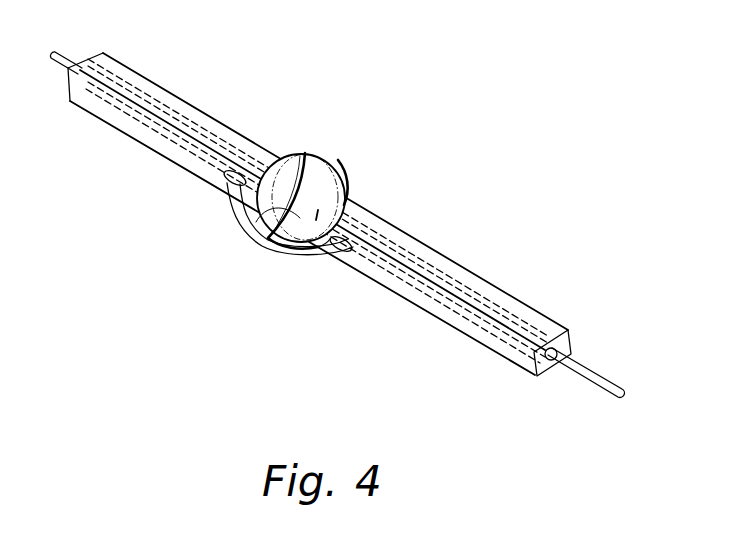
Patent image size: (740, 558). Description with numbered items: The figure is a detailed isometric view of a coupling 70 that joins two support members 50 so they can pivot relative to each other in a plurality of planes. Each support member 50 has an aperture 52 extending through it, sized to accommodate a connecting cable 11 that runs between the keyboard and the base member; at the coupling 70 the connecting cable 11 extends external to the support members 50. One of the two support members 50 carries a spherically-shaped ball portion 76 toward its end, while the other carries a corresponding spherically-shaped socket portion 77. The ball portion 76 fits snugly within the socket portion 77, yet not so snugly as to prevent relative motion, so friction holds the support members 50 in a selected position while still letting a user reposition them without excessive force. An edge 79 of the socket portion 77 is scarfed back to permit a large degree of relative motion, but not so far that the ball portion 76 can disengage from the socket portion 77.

The coupling 70 is at (337, 232).
The support member 50 is at (193, 86).
The aperture 52 is at (148, 124).
The connecting cable 11 is at (580, 376).
The ball portion 76 is at (293, 150).
The socket portion 77 is at (297, 238).
The edge 79 is at (247, 233).